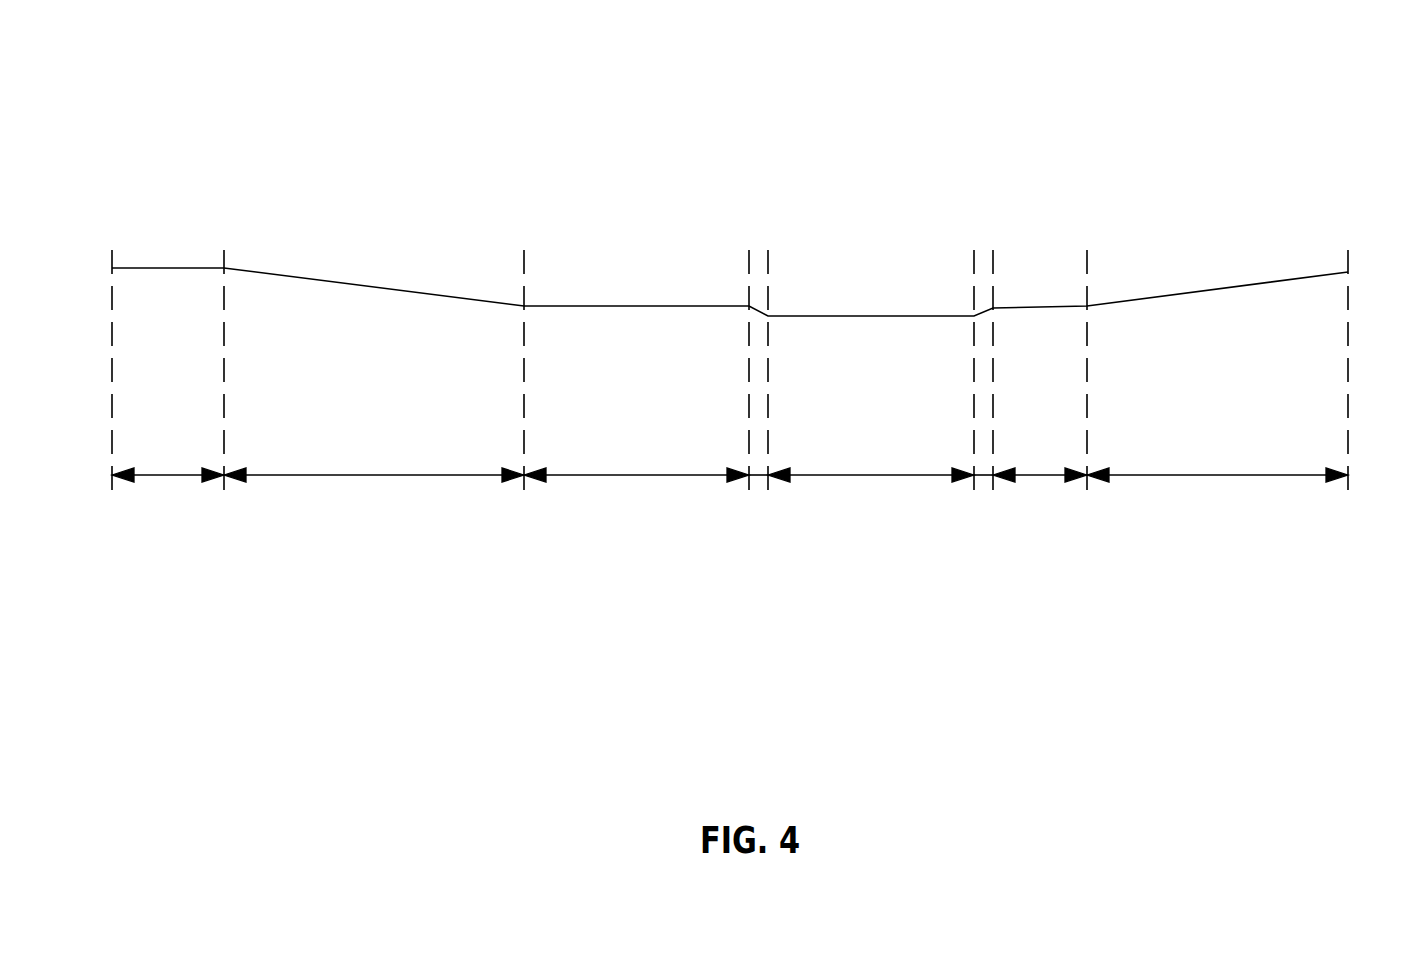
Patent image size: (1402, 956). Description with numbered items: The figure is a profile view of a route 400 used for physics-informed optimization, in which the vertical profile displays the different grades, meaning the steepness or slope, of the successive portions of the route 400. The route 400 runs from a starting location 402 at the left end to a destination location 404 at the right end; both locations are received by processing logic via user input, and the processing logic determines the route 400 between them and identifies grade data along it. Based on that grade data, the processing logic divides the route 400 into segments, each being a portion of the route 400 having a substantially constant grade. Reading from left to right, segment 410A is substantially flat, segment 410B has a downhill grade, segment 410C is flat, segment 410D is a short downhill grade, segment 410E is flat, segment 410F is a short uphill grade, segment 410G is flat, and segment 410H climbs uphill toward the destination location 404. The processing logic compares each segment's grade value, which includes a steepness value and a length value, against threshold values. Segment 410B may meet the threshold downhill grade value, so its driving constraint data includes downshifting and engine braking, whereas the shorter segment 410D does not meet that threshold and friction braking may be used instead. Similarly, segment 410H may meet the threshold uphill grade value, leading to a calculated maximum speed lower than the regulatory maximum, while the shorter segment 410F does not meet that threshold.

The route 400 is at (903, 95).
The starting location 402 is at (117, 256).
The destination location 404 is at (1345, 257).
The segment 410A is at (170, 497).
The segment 410B is at (379, 499).
The segment 410C is at (601, 499).
The segment 410D is at (761, 498).
The segment 410E is at (826, 500).
The segment 410F is at (986, 498).
The segment 410G is at (1043, 499).
The segment 410H is at (1223, 499).